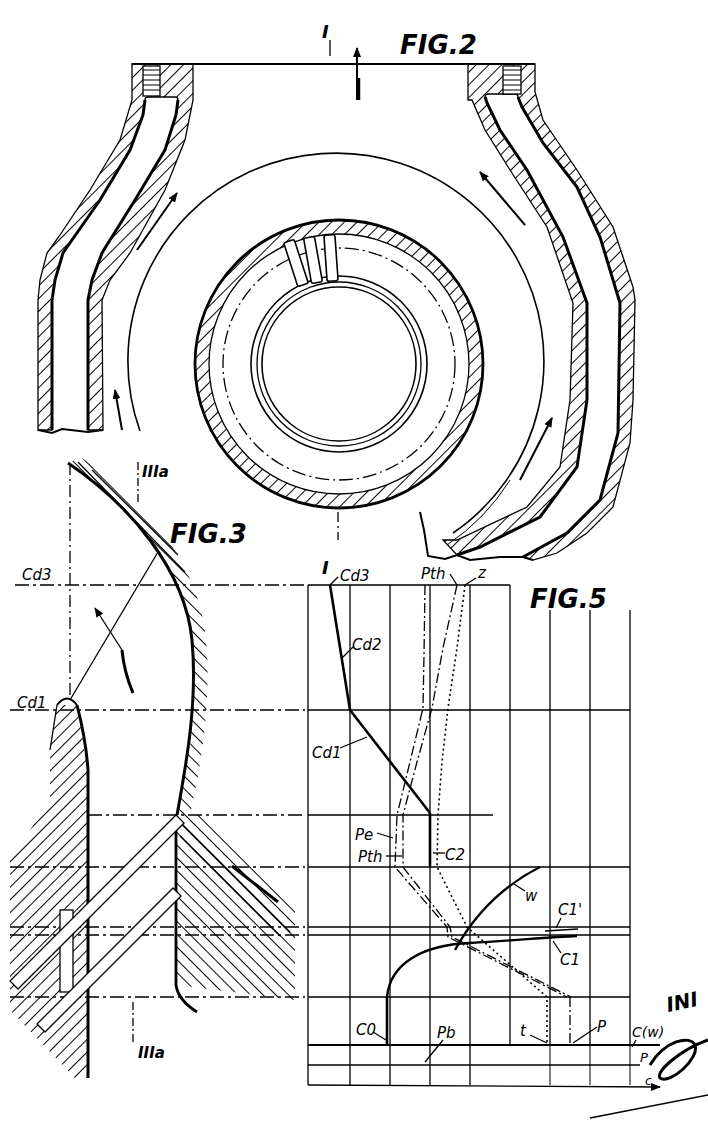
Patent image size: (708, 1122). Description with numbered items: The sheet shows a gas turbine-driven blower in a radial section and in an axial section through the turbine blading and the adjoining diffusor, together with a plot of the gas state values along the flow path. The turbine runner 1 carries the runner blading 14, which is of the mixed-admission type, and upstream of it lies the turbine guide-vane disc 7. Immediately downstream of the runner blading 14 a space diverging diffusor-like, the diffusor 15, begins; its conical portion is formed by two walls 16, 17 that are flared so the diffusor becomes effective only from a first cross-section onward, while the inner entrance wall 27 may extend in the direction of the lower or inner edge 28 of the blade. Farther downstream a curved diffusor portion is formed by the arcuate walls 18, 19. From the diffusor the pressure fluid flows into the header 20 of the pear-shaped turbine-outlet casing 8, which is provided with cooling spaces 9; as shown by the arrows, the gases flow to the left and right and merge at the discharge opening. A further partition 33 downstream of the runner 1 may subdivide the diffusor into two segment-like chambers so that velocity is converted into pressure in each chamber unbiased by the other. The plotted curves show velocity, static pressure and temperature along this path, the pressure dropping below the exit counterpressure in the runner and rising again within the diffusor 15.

In FIG. 2, the turbine runner 1 is at (339, 364).
In FIG. 3, the turbine runner 1 is at (63, 950).
In FIG. 3, the turbine guide-vane disc 7 is at (53, 1043).
In FIG. 2, the turbine-outlet casing 8 is at (110, 160).
In FIG. 2, the cooling spaces 9 is at (138, 145).
In FIG. 2, the runner blading 14 is at (333, 240).
In FIG. 3, the runner blading 14 is at (140, 875).
In FIG. 3, the diffusor 15 is at (140, 743).
In FIG. 3, the diffusor wall 16 is at (182, 763).
In FIG. 3, the diffusor wall 17 is at (60, 774).
In FIG. 3, the arcuate wall 18 is at (197, 655).
In FIG. 3, the arcuate wall 19 is at (77, 703).
In FIG. 2, the header 20 is at (283, 97).
In FIG. 3, the inner entrance wall 27 is at (88, 820).
In FIG. 3, the inner edge 28 is at (92, 953).
In FIG. 3, the partition 33 is at (140, 833).